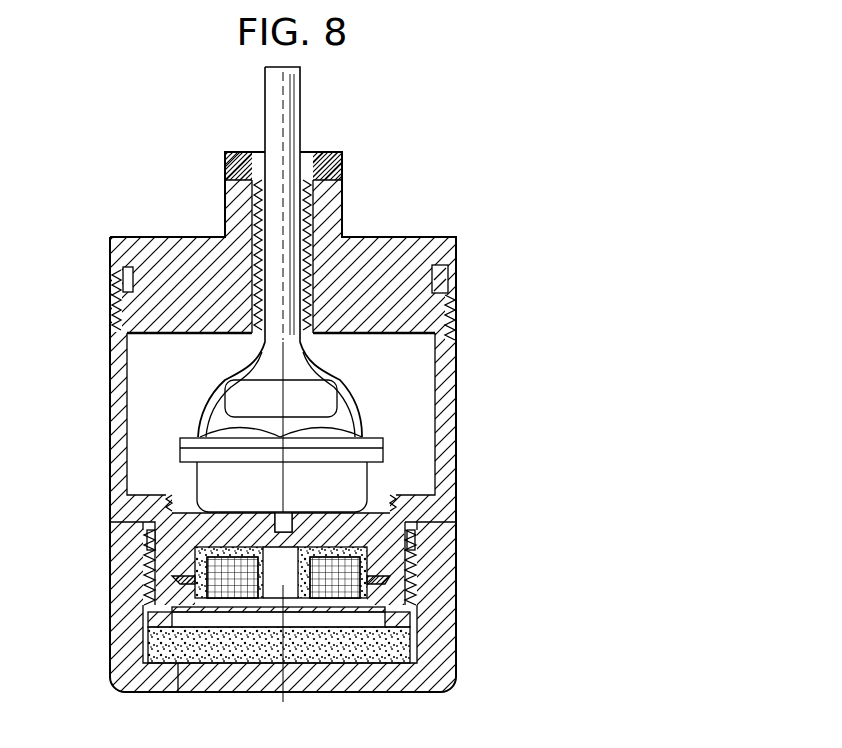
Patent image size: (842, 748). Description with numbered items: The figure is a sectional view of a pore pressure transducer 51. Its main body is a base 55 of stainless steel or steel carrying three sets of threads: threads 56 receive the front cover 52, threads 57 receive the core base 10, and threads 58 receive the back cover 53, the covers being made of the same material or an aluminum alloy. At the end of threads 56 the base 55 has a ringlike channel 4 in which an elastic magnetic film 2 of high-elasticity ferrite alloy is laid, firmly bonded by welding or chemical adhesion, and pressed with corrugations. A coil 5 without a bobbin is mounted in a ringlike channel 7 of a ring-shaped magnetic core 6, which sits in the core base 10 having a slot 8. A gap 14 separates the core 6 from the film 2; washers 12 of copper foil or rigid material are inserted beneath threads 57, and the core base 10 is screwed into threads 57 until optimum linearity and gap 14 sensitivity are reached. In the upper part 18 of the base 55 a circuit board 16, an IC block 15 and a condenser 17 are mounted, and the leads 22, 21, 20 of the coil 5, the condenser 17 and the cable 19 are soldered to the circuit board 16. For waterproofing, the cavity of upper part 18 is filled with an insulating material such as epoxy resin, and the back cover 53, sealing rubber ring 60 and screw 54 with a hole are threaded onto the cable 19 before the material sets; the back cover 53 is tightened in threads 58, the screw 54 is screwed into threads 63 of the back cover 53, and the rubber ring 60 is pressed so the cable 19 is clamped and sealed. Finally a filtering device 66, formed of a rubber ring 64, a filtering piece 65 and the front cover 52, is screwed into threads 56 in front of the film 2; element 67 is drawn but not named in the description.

The elastic magnetic film 2 is at (383, 612).
The ringlike channel 4 is at (375, 600).
The coil 5 is at (352, 600).
The ring-shaped magnetic core 6 is at (317, 607).
The ringlike channel 7 is at (358, 580).
The slot 8 is at (166, 505).
The core base 10 is at (432, 530).
The washers 12 is at (195, 600).
The gap 14 is at (278, 607).
The IC block 15 is at (213, 473).
The circuit board 16 is at (200, 437).
The condenser 17 is at (250, 392).
The upper part 18 is at (185, 347).
The cable 19 is at (287, 115).
The lead 20 is at (210, 440).
The lead 21 is at (348, 423).
The lead 22 is at (285, 483).
The transducer 51 is at (445, 128).
The front cover 52 is at (440, 590).
The back cover 53 is at (330, 212).
The screw 54 is at (335, 162).
The base 55 is at (447, 360).
The threads 56 is at (410, 578).
The threads 57 is at (393, 507).
The threads 58 is at (450, 290).
The sealing rubber ring 60 is at (237, 265).
The threads 63 is at (252, 212).
The rubber ring 64 is at (180, 612).
The filtering piece 65 is at (152, 622).
The filtering device 66 is at (157, 650).
The plate 67 is at (158, 617).